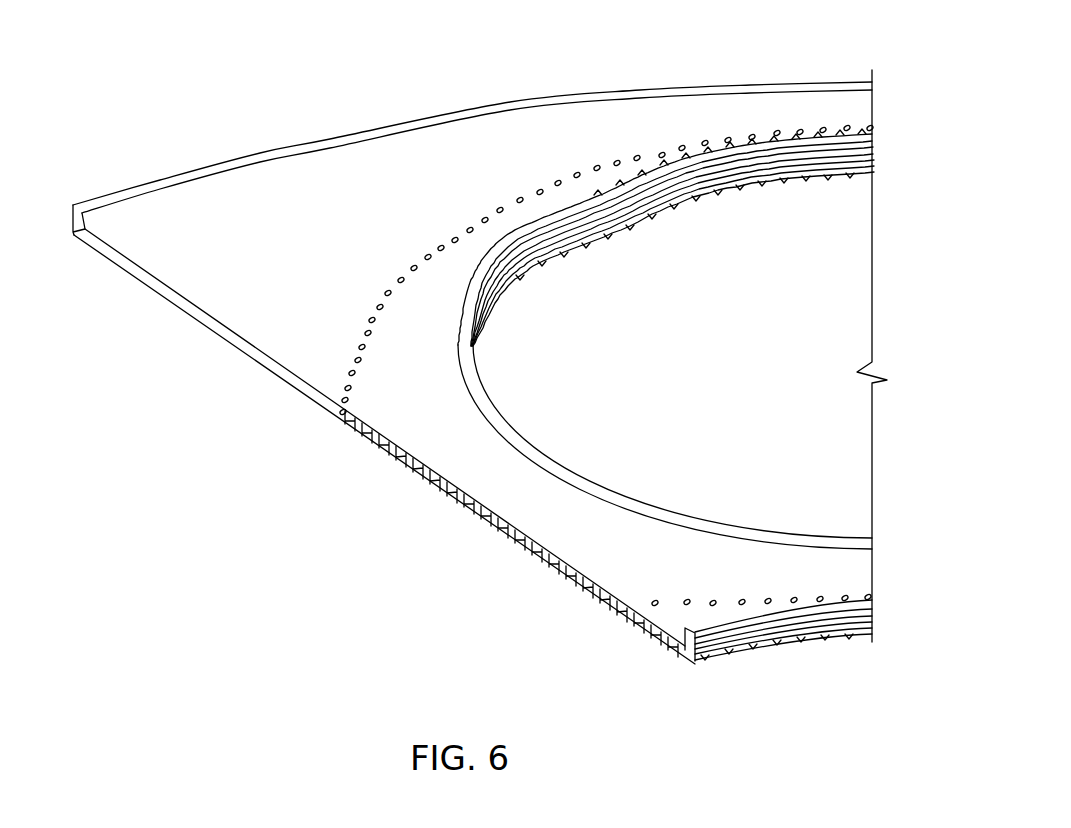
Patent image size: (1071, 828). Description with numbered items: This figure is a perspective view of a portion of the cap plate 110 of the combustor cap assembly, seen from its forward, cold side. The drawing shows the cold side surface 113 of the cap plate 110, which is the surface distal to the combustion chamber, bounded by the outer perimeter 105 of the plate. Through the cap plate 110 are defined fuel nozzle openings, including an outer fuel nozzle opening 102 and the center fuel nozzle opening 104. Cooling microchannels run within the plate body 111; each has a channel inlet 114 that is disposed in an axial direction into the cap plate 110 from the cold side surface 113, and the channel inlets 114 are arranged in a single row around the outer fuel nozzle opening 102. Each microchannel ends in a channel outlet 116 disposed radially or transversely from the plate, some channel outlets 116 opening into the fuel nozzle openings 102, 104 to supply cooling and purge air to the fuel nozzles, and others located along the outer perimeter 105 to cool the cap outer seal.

The outer fuel nozzle opening 102 is at (715, 501).
The center fuel nozzle opening 104 is at (887, 620).
The outer perimeter 105 is at (718, 62).
The cap plate 110 is at (110, 161).
The plate body 111 is at (167, 323).
The cold side surface 113 is at (293, 203).
The channel inlet 114 is at (443, 250).
The channel outlet 116 is at (640, 206).